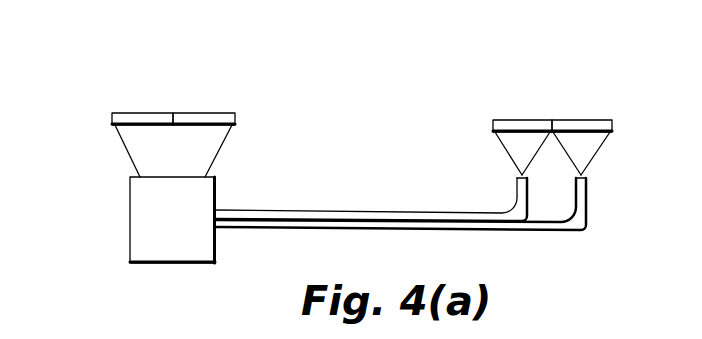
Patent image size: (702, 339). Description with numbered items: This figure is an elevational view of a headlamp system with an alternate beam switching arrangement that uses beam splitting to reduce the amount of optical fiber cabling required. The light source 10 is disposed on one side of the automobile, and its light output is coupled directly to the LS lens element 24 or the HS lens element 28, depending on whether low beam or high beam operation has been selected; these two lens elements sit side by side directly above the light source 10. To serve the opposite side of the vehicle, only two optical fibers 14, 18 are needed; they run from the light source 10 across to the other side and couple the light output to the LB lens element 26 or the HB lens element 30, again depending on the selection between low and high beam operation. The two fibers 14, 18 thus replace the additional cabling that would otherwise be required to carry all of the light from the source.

The light source 10 is at (152, 203).
The optical fiber 14 is at (588, 208).
The optical fiber 18 is at (517, 194).
The LS lens element 24 is at (138, 112).
The HS lens element 28 is at (195, 112).
The HB lens element 30 is at (493, 120).
The LB lens element 26 is at (575, 120).